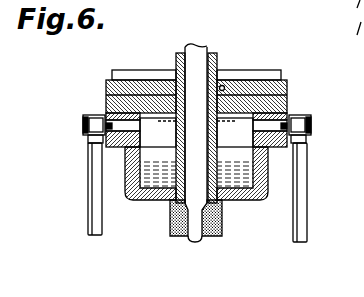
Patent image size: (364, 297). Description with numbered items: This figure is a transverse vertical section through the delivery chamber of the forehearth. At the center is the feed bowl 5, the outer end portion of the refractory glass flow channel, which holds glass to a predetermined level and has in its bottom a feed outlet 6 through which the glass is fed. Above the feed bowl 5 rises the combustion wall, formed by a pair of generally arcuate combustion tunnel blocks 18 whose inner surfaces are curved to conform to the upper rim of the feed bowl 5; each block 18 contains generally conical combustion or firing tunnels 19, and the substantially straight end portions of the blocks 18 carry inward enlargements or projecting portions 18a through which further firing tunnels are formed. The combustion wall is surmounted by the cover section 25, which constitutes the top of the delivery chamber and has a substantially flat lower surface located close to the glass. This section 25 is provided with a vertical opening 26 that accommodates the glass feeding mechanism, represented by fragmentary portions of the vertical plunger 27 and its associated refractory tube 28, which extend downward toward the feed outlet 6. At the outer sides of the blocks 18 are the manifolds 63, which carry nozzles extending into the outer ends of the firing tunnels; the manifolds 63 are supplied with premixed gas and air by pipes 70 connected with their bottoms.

The feed bowl 5 is at (133, 202).
The feed outlet 6 is at (192, 237).
The combustion tunnel block 18 is at (112, 148).
The inward extension 18a is at (147, 120).
The combustion tunnel 19 is at (106, 100).
The cover section 25 is at (258, 80).
The vertical opening 26 is at (224, 86).
The vertical plunger 27 is at (186, 46).
The refractory tube 28 is at (218, 55).
The manifold 63 is at (83, 117).
The pipe 70 is at (93, 210).